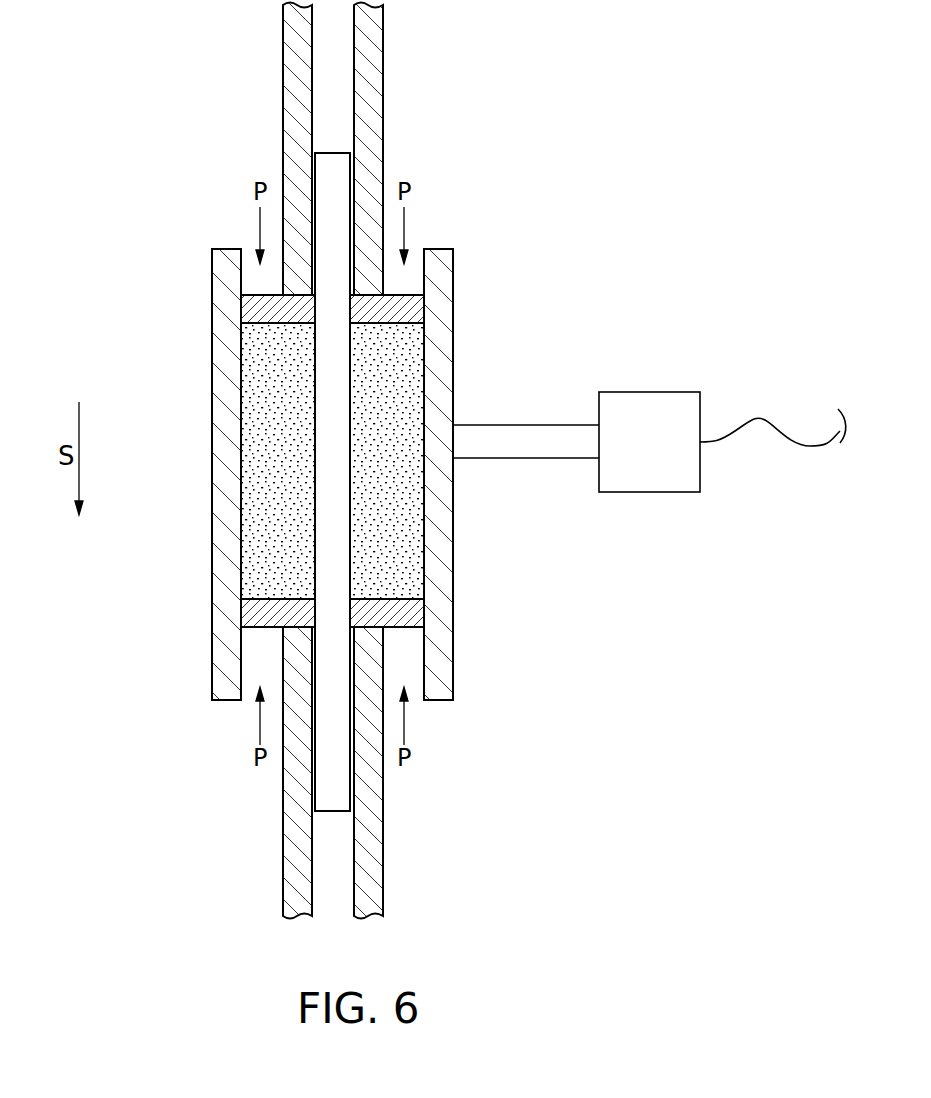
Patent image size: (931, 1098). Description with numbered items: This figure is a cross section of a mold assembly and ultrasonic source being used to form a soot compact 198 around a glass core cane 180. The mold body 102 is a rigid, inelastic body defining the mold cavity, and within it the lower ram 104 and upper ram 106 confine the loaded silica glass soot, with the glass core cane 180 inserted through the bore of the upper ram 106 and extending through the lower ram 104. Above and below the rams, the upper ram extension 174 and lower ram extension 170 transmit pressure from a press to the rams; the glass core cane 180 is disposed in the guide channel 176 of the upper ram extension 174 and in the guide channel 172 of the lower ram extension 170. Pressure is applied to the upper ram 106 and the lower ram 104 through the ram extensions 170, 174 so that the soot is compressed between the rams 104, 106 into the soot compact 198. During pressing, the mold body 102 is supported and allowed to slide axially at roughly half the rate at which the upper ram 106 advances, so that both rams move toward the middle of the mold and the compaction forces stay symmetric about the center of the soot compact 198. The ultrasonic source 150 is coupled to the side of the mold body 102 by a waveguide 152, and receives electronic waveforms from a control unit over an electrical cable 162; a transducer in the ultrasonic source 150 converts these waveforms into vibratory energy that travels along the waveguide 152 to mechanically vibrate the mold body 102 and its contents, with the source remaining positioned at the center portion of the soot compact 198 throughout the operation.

The mold body 102 is at (453, 290).
The lower ram 104 is at (243, 613).
The upper ram 106 is at (243, 310).
The ultrasonic source 150 is at (650, 392).
The waveguide 152 is at (521, 459).
The electrical cable 162 is at (755, 418).
The lower ram extension 170 is at (383, 821).
The guide channel 172 is at (340, 845).
The upper ram extension 174 is at (383, 15).
The guide channel 176 is at (340, 77).
The glass core cane 180 is at (327, 166).
The soot compact 198 is at (243, 446).